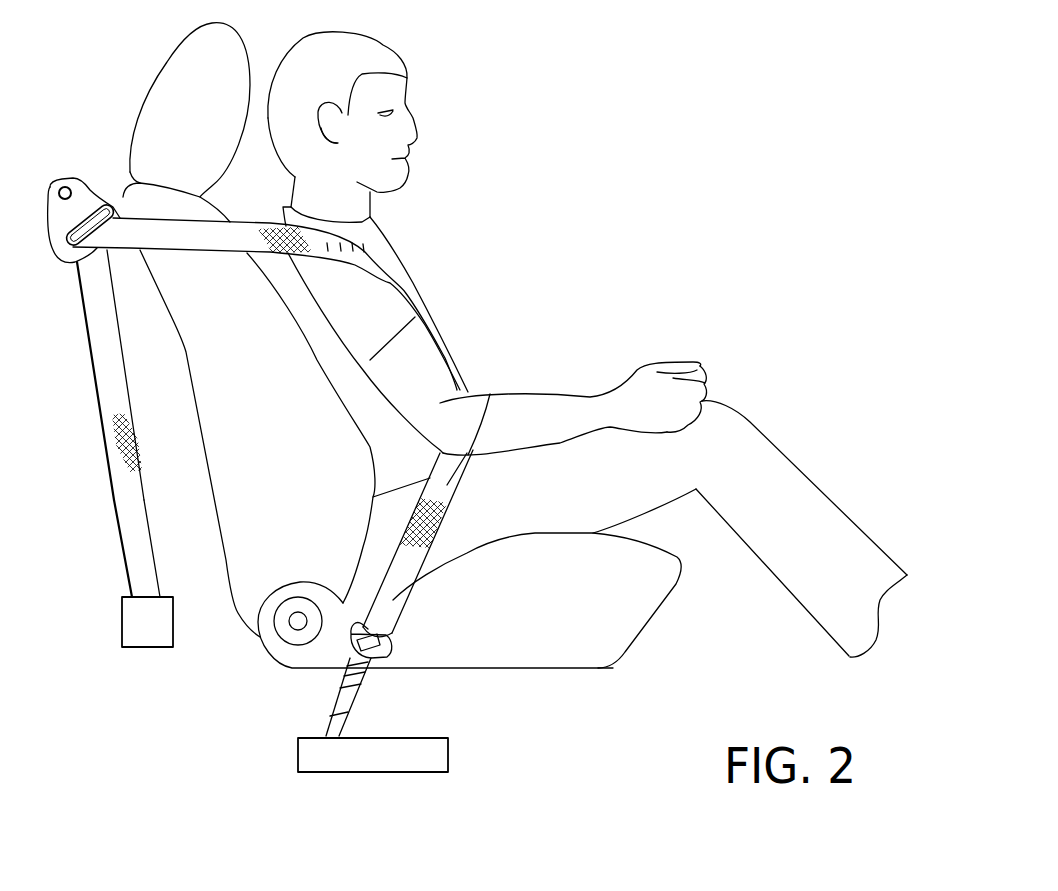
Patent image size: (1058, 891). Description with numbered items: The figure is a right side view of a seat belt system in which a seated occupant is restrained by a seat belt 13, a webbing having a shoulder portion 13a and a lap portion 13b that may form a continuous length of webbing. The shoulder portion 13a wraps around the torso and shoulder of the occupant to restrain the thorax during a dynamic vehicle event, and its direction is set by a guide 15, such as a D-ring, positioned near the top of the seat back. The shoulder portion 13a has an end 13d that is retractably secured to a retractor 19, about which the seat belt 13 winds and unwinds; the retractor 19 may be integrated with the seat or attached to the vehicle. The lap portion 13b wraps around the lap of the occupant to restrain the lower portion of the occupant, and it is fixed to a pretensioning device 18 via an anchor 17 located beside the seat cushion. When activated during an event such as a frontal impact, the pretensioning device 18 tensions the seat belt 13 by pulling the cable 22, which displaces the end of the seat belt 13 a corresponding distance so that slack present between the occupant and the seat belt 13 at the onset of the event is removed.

The seat belt 13 is at (105, 337).
The shoulder portion 13a is at (395, 262).
The lap portion 13b is at (447, 483).
The end 13d is at (140, 583).
The guide 15 is at (63, 177).
The anchor 17 is at (375, 657).
The pretensioning device 18 is at (293, 755).
The retractor 19 is at (160, 636).
The cable 22 is at (323, 733).